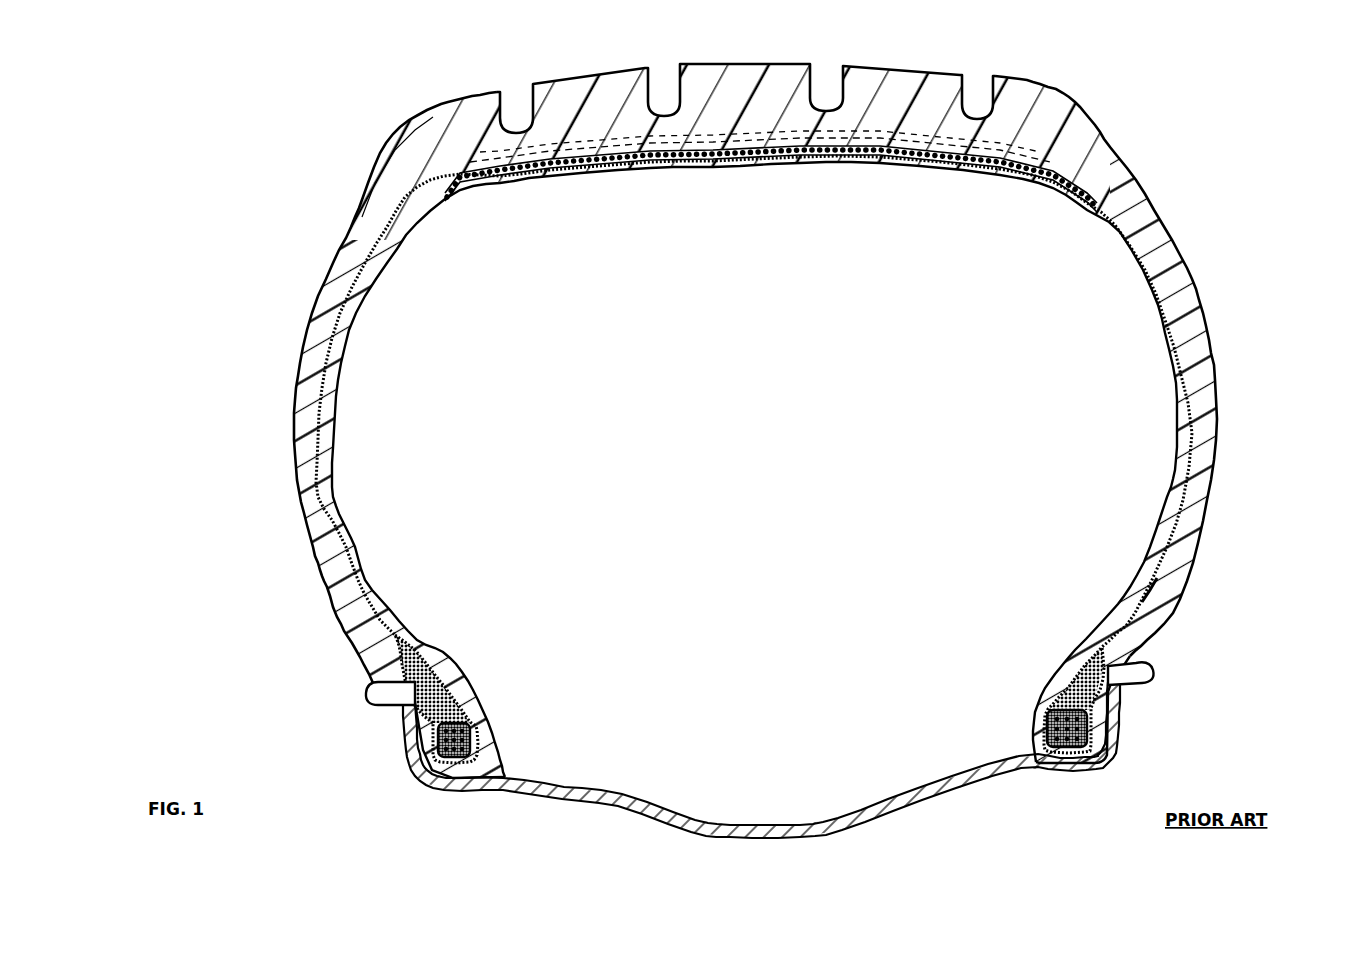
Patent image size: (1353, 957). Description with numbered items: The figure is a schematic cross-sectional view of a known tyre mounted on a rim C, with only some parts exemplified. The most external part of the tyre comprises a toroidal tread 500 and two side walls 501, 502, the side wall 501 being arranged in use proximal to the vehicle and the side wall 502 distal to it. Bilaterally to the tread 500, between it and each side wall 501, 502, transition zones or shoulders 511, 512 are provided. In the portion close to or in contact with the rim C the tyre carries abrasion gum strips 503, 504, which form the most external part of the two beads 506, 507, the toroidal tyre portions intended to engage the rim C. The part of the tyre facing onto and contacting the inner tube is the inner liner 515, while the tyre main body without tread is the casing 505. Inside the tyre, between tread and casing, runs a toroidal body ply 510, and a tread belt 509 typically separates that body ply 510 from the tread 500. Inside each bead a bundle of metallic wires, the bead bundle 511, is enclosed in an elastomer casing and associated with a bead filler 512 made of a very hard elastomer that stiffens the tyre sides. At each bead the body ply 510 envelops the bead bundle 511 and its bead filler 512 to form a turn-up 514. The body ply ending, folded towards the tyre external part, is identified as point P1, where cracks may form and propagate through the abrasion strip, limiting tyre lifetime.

The toroidal tread 500 is at (1041, 77).
The side wall 501 is at (1224, 435).
The side wall 502 is at (284, 484).
The abrasion gum strip 503 is at (1140, 654).
The abrasion gum strip 504 is at (367, 666).
The casing 505 is at (419, 199).
The bead 506 is at (1010, 721).
The bead 507 is at (497, 702).
The tread belt 509 is at (1043, 153).
The toroidal body ply 510 is at (1105, 207).
The transition zone (shoulder) / bead bundle 511 is at (1166, 217).
The transition zone (shoulder) / bead filler 512 is at (325, 268).
The turn-up 514 is at (1103, 707).
The inner liner 515 is at (785, 170).
The body ply ending P1 is at (1144, 596).
The rim C is at (931, 807).